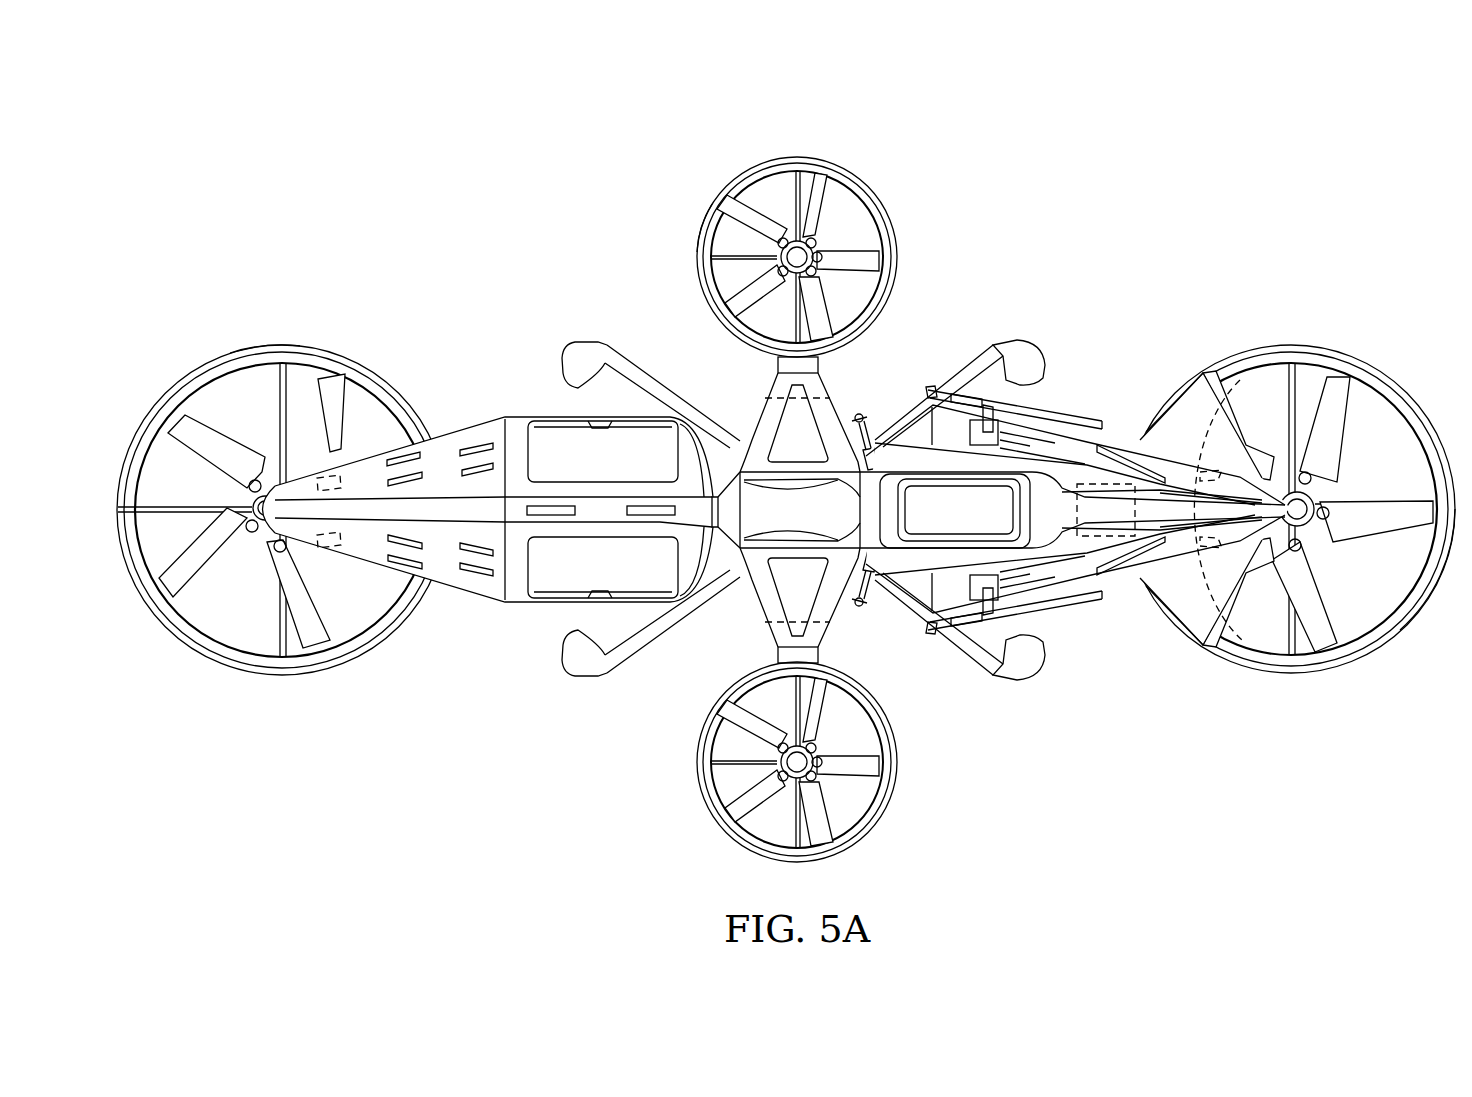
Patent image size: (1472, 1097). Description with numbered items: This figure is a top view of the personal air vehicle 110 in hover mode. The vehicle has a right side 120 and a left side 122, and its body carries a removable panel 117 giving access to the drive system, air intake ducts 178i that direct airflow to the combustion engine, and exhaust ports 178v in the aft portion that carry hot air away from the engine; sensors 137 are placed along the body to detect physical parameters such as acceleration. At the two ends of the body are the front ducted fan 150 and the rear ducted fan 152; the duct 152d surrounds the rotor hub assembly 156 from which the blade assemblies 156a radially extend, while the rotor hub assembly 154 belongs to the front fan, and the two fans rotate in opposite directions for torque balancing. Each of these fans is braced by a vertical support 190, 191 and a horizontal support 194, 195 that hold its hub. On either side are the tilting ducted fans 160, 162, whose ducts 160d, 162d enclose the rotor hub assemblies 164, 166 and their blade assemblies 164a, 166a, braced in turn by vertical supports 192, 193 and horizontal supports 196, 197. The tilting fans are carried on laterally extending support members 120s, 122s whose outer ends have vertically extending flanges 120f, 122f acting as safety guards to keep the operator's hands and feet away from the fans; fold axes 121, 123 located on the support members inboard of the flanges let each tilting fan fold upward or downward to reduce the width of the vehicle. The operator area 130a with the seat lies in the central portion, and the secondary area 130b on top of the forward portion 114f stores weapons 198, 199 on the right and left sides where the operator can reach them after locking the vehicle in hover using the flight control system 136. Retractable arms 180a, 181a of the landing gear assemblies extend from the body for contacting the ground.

The personal air vehicle 110 is at (1245, 230).
The forward fins 114f is at (1160, 382).
The removable panel 117 is at (545, 425).
The right side 120 is at (472, 600).
The flange 120f is at (818, 650).
The support member 120s is at (768, 620).
The fold axis 121 is at (848, 602).
The left side 122 is at (470, 420).
The flange 122f is at (818, 368).
The support member 122s is at (768, 398).
The fold axis 123 is at (848, 418).
The operator area 130a is at (850, 125).
The secondary area 130b is at (540, 262).
The flight control system 136 is at (1082, 618).
The sensors 137 is at (320, 480).
The front ducted fan 150 is at (1340, 665).
The rear ducted fan 152 is at (164, 637).
The duct 152d is at (298, 348).
The rotor hub assembly 154 is at (1382, 590).
The rotor hub assembly 156 is at (215, 590).
The blade assemblies 156a is at (210, 395).
The side tilting ducted fan 160 is at (700, 795).
The duct 160d is at (737, 832).
The side tilting ducted fan 162 is at (700, 218).
The duct 162d is at (737, 190).
The rotor hub assembly 164 is at (855, 790).
The blade assemblies 164a is at (855, 760).
The rotor hub assembly 166 is at (855, 235).
The blade assemblies 166a is at (860, 285).
The air intake ducts 178i is at (700, 440).
The exhaust ports 178v is at (388, 452).
The retractable arms 180a is at (1012, 345).
The retractable arms 181a is at (595, 342).
The vertical support 190 is at (1345, 495).
The vertical support 191 is at (715, 752).
The vertical support 192 is at (165, 455).
The vertical support 193 is at (715, 270).
The horizontal support 194 is at (1272, 675).
The horizontal support 195 is at (780, 715).
The horizontal support 196 is at (275, 657).
The horizontal support 197 is at (780, 305).
The weapon 198 is at (1085, 640).
The weapon 199 is at (1060, 410).